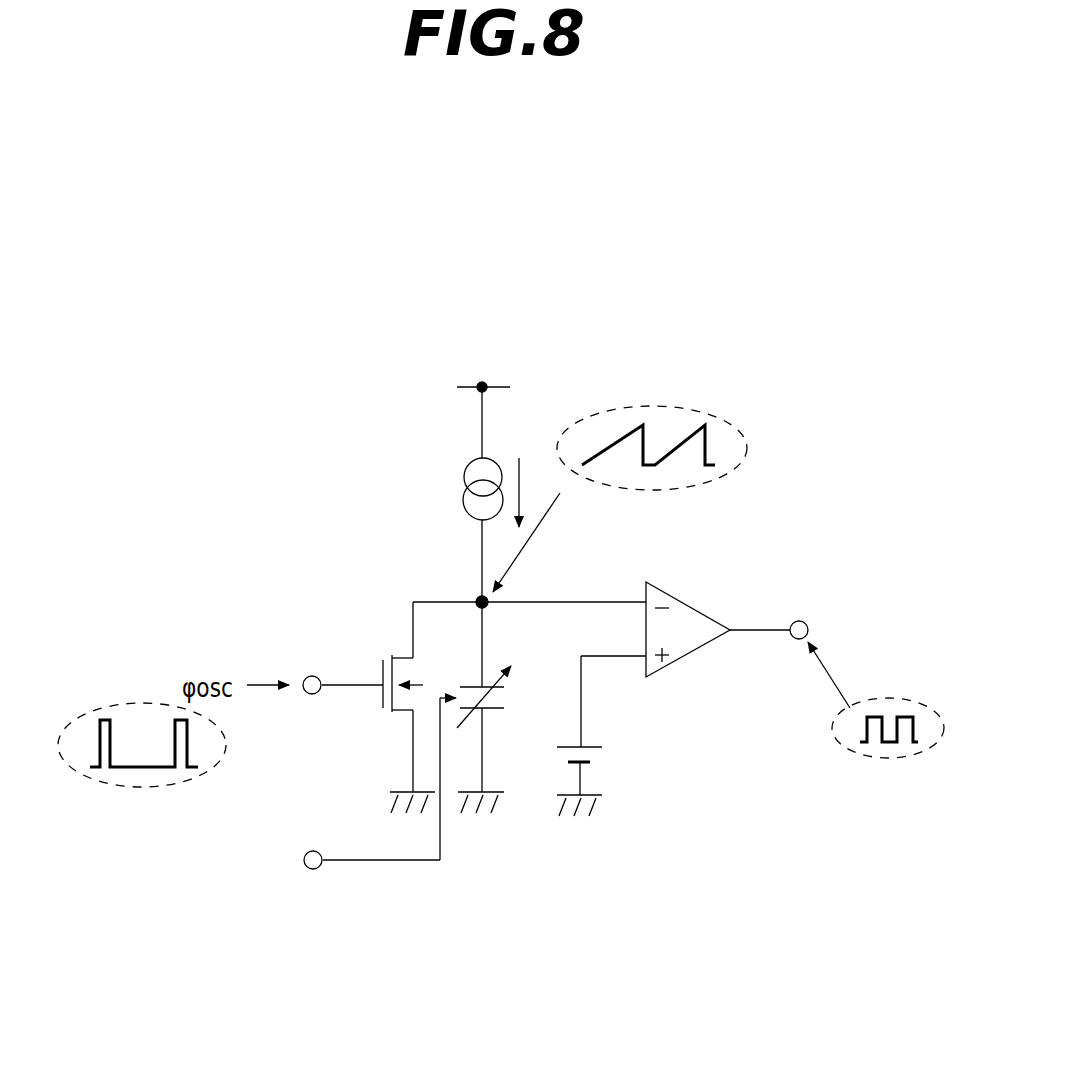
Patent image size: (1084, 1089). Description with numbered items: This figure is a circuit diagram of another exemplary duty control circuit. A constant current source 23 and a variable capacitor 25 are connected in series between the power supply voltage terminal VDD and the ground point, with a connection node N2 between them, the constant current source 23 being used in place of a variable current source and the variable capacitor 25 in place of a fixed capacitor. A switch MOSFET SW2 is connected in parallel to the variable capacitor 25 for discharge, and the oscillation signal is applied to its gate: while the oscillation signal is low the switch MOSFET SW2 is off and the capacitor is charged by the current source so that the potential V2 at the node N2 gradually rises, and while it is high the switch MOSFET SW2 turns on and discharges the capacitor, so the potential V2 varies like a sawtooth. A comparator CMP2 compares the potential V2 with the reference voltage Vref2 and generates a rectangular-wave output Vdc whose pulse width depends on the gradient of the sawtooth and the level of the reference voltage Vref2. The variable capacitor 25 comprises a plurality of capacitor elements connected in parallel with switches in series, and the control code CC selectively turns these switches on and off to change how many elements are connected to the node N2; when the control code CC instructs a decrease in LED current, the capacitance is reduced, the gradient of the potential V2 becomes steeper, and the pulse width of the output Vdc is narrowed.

The constant current source 23 is at (447, 462).
The variable capacitor 25 is at (513, 695).
The power supply voltage terminal VDD is at (483, 401).
The connection node N2 is at (478, 598).
The potential at connection node V2 is at (526, 543).
The switch MOSFET SW2 is at (372, 697).
The control code CC is at (355, 790).
The comparator CMP2 is at (690, 602).
The output signal Vdc is at (796, 629).
The reference voltage Vref2 is at (616, 725).